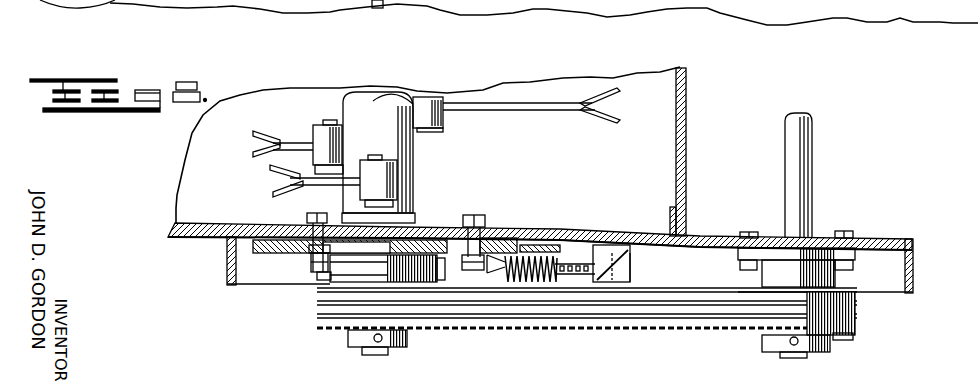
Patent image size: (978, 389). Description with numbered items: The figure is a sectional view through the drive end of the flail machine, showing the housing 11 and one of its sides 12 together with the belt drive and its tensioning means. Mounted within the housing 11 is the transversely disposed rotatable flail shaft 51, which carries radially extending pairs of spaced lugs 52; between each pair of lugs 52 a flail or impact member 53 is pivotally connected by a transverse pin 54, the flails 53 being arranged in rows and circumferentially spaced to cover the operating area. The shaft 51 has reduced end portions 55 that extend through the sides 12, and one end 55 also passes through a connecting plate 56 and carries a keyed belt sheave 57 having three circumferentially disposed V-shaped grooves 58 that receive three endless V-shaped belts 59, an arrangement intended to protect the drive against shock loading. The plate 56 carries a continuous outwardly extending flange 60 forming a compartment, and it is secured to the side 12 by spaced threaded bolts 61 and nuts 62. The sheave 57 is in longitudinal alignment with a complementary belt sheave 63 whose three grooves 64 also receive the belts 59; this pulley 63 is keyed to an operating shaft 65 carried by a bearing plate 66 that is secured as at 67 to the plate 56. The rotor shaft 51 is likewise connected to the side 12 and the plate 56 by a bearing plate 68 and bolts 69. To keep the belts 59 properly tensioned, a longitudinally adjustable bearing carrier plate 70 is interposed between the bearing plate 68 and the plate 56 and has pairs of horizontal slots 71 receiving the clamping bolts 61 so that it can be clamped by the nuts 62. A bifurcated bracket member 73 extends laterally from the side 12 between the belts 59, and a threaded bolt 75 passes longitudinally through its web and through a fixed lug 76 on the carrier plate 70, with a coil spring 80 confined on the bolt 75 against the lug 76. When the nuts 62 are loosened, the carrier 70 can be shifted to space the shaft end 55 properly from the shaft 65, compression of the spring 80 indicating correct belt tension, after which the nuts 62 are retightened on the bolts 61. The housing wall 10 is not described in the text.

The housing wall 10 is at (612, 74).
The housing 11 is at (690, 102).
The sides 12 is at (177, 239).
The flail shaft 51 is at (417, 137).
The lugs 52 is at (321, 124).
The flail 53 is at (280, 171).
The transverse pin 54 is at (329, 120).
The reduced end portions 55 is at (373, 356).
The connecting plate 56 is at (722, 238).
The belt sheave 57 is at (353, 338).
The V-shaped grooves 58 is at (326, 300).
The endless V-shaped belts 59 is at (527, 329).
The flange 60 is at (912, 282).
The threaded bolts 61 is at (486, 221).
The nuts 62 is at (317, 262).
The belt sheave 63 is at (846, 335).
The grooves 64 is at (857, 317).
The operating shaft 65 is at (812, 164).
The bearing plate 66 is at (855, 248).
The securing means 67 is at (846, 233).
The bearing plate 68 is at (432, 258).
The bolts 69 is at (327, 297).
The adjustable bearing carrier plate 70 is at (229, 249).
The horizontal slots 71 is at (300, 251).
The bifurcated bracket member 73 is at (633, 252).
The threaded bolt 75 is at (580, 245).
The fixed lug 76 is at (515, 258).
The coil spring 80 is at (548, 266).